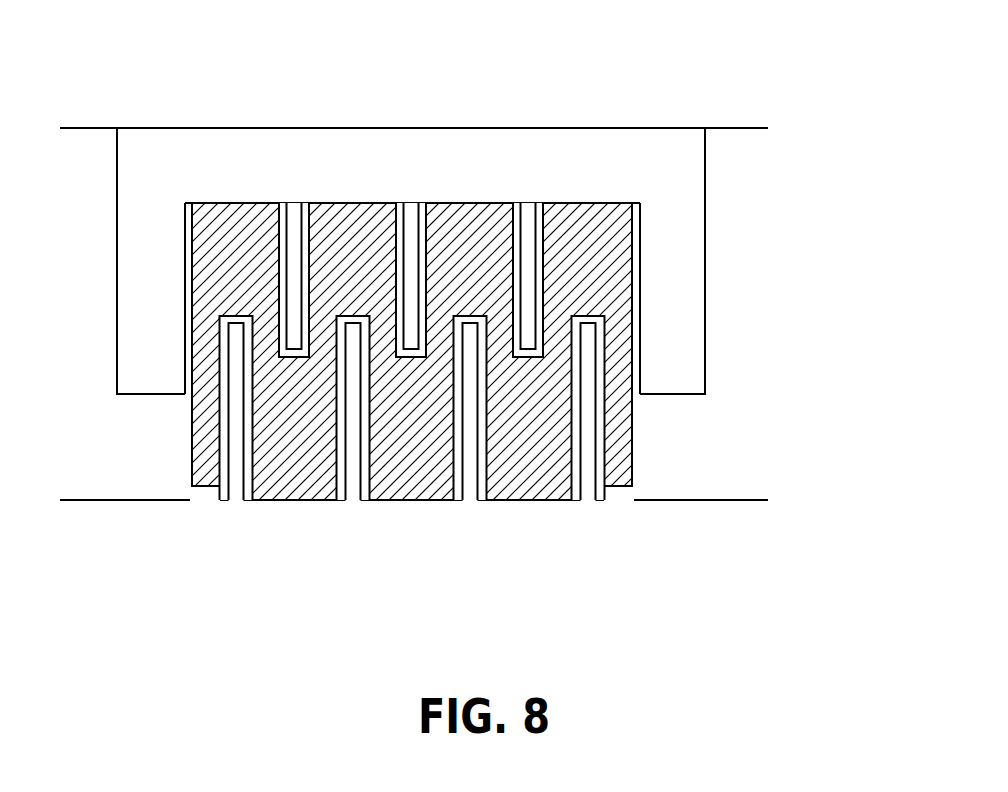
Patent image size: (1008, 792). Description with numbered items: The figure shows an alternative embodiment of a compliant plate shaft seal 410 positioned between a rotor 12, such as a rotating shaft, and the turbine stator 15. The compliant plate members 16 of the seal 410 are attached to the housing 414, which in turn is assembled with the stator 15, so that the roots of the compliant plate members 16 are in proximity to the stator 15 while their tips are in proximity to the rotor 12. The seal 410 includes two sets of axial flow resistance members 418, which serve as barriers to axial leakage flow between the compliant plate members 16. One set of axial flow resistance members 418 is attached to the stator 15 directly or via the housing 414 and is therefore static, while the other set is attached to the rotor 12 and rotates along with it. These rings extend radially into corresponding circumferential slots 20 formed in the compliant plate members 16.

The seal 410 is at (207, 86).
The stator 15 is at (414, 80).
The housing 414 is at (683, 168).
The rotor 12 is at (414, 554).
The compliant plate members 16 is at (558, 443).
The axial flow resistance members 418 is at (546, 253).
The circumferential slots 20 is at (281, 356).